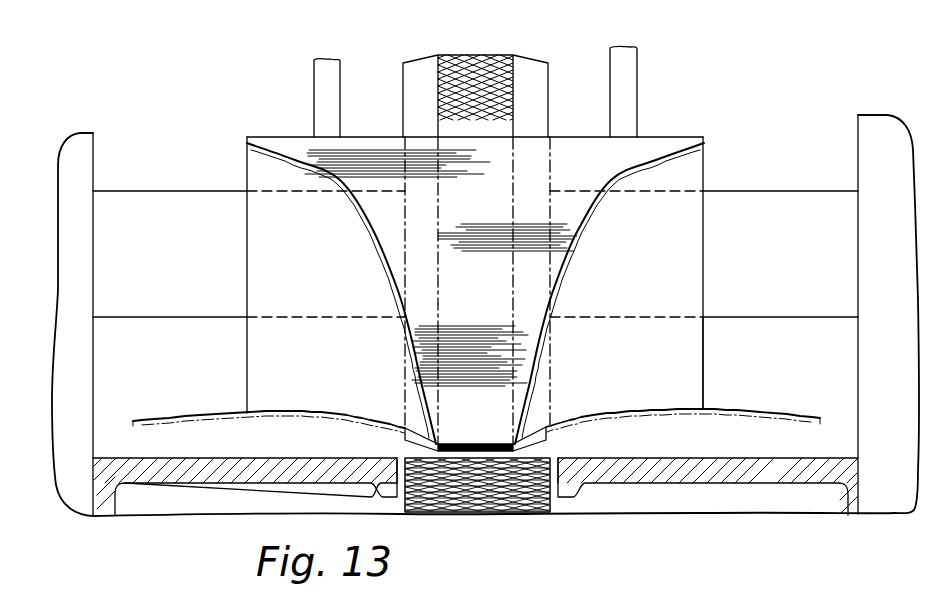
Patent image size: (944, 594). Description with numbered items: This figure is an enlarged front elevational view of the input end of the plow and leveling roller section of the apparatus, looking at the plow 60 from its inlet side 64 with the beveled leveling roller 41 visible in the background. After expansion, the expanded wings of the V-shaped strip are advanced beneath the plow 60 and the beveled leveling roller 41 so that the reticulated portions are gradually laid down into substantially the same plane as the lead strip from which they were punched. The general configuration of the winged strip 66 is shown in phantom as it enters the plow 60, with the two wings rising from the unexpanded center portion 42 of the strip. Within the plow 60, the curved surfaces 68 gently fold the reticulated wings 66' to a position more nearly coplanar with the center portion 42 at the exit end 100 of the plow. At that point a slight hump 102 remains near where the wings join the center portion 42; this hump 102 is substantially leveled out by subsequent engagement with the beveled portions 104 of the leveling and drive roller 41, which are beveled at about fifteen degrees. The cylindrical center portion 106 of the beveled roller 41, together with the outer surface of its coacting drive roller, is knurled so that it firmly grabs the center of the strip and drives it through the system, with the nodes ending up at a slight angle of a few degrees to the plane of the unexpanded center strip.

The plow 60 is at (296, 137).
The inlet side 64 is at (652, 134).
The beveled portions 104 is at (408, 80).
The beveled leveling roller 41 is at (493, 60).
The cylindrical center portion 106 is at (463, 82).
The curved surfaces 68 is at (275, 265).
The winged strip 66 is at (466, 284).
The center portion 42 is at (455, 443).
The hump 102 is at (385, 424).
The reticulated wings 66' is at (484, 394).
The exit end 100 is at (707, 410).